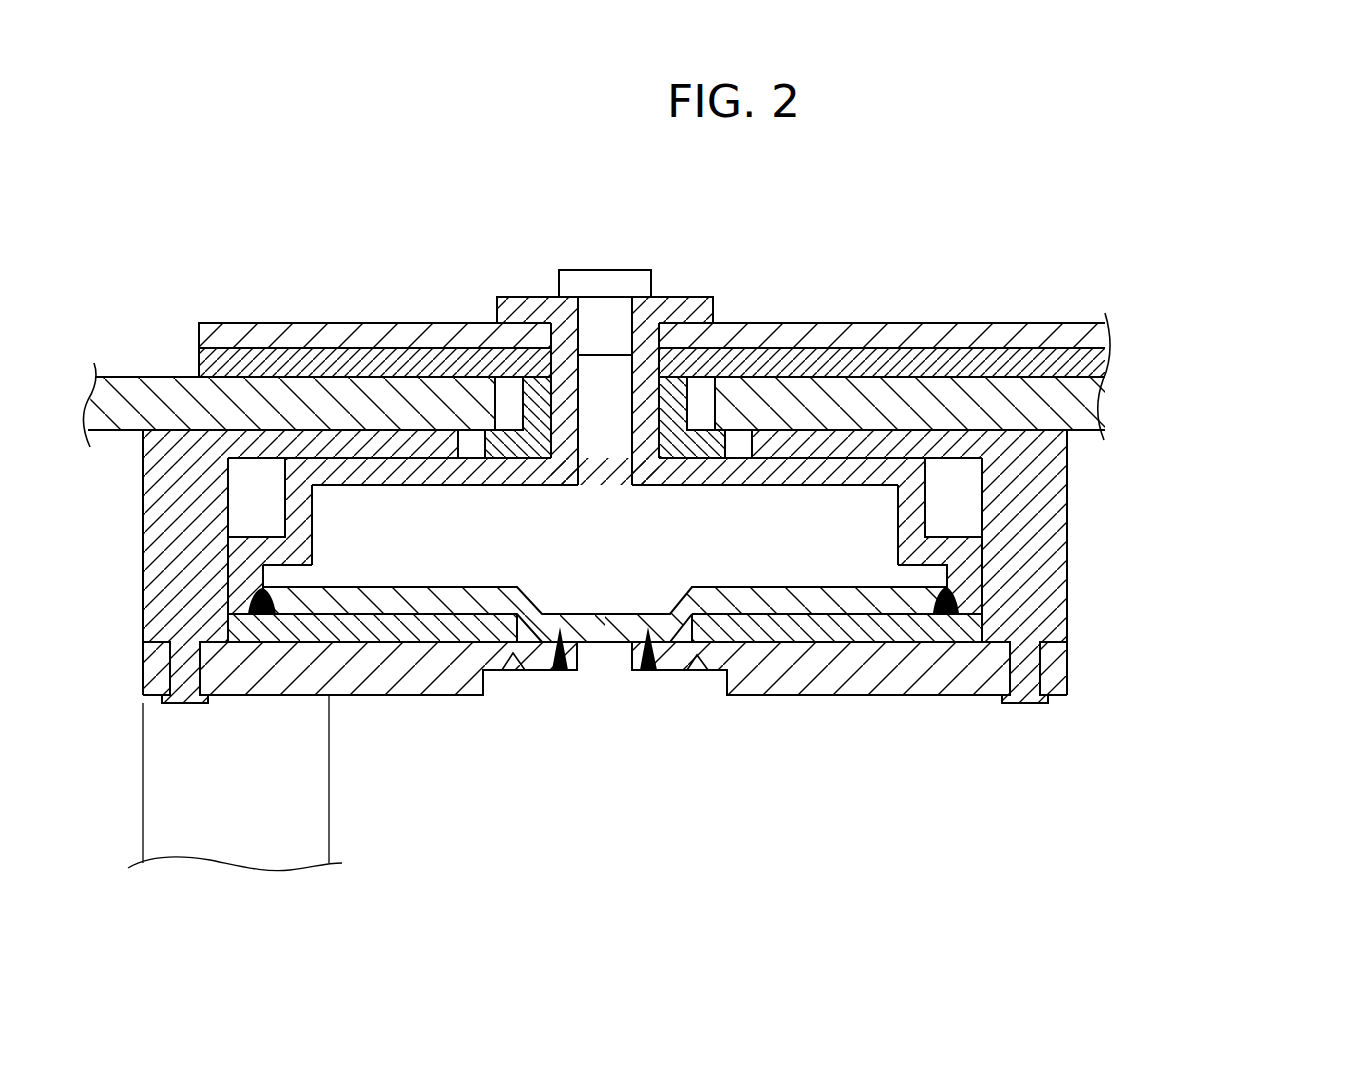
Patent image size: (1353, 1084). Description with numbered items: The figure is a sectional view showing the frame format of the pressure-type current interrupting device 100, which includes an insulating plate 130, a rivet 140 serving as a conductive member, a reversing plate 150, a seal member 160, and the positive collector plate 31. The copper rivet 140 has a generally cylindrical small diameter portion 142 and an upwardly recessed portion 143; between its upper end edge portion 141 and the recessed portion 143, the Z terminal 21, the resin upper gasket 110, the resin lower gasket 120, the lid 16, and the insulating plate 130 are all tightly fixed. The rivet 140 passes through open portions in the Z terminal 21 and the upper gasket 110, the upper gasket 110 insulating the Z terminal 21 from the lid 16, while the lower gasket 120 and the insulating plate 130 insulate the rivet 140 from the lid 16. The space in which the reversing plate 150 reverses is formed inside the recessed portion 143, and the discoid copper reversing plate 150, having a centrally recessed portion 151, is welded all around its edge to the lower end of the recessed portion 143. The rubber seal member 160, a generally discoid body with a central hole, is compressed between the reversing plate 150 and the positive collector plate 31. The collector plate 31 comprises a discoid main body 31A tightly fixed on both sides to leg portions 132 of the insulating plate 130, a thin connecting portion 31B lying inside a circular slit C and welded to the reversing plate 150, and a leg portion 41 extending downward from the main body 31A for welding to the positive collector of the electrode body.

The Z terminal 21 is at (935, 322).
The upper gasket 110 is at (1112, 367).
The lid 16 is at (1095, 383).
The insulating plate 130 is at (1089, 472).
The rivet 140 is at (955, 509).
The upper end edge portion 141 is at (703, 303).
The small diameter portion 142 is at (632, 395).
The recessed portion 143 is at (300, 502).
The lower gasket 120 is at (713, 425).
The reversing plate 150 is at (847, 578).
The recessed portion 151 is at (614, 590).
The seal member 160 is at (965, 625).
The positive collector plate 31 is at (1089, 679).
The main body 31A is at (882, 680).
The connecting portion 31B is at (542, 660).
The slit C is at (697, 670).
The leg portions 132 is at (1022, 702).
The leg portion 41 is at (304, 848).
The pressure-type current interrupting device 100 is at (1227, 467).